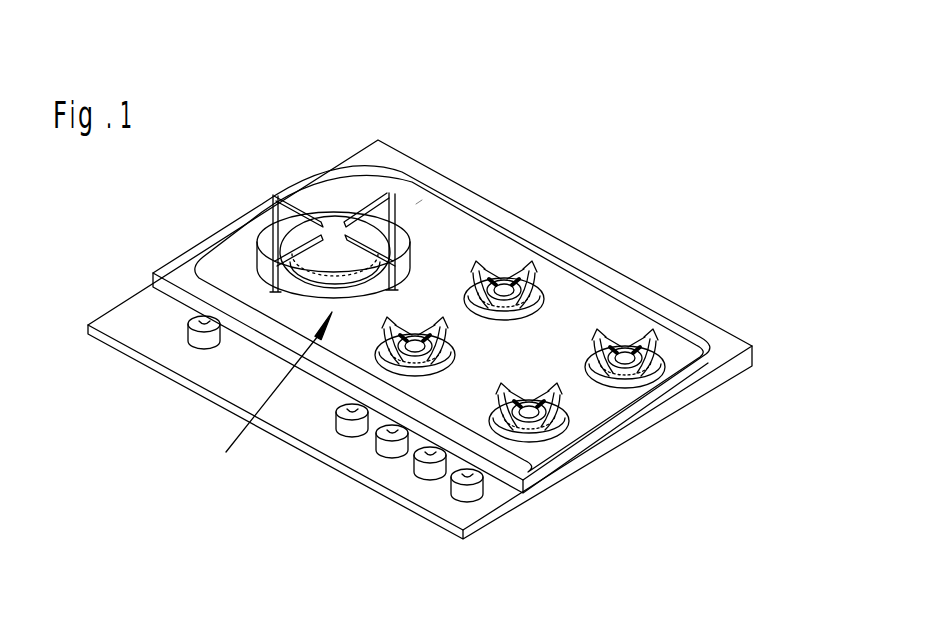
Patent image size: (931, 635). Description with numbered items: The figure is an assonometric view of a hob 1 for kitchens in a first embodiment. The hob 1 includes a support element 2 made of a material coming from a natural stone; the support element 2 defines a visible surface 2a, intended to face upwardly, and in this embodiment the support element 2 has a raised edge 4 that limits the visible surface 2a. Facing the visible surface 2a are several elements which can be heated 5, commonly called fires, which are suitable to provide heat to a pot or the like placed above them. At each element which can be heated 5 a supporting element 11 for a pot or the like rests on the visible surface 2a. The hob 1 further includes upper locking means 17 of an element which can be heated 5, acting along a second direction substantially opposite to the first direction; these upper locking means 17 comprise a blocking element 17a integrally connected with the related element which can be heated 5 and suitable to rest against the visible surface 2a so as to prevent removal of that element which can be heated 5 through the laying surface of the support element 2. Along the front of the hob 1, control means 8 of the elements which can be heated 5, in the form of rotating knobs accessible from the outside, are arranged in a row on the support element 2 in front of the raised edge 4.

The hob 1 is at (694, 163).
The support element 2 is at (596, 428).
The visible surface 2a is at (217, 280).
The raised edge 4 is at (250, 230).
The element which can be heated 5 is at (333, 213).
The control means 8 is at (196, 325).
The supporting element 11 is at (398, 180).
The upper locking means 17 is at (266, 395).
The blocking element 17a is at (458, 262).